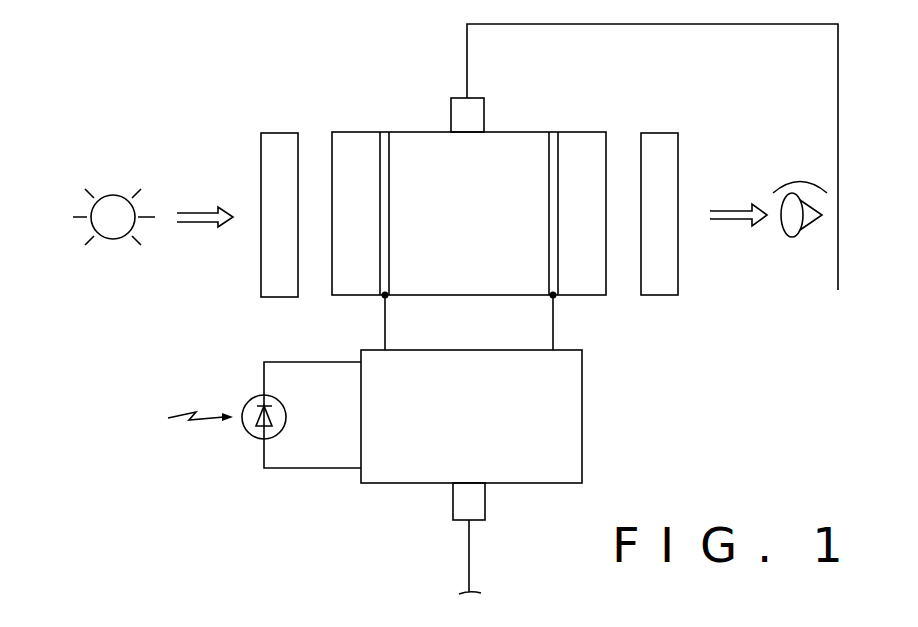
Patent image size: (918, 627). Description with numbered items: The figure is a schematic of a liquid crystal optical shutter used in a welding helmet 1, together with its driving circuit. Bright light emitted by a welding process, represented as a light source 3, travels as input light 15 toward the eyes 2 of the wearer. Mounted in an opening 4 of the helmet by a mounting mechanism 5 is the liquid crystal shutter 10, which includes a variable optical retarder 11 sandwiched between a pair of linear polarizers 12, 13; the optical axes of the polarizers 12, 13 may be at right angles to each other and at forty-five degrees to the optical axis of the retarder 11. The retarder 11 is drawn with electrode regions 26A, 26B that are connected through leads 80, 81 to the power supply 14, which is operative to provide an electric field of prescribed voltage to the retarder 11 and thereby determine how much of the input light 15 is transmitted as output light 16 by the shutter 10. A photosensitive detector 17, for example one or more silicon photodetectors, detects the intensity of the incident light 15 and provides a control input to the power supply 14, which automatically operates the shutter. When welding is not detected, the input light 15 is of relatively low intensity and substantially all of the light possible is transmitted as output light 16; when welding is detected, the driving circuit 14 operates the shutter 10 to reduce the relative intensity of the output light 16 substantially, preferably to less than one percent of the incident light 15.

The welding helmet 1 is at (366, 556).
The eyes 2 is at (808, 231).
The light source 3 is at (120, 243).
The opening 4 is at (386, 491).
The mounting mechanism 5 is at (452, 522).
The liquid crystal shutter 10 is at (638, 312).
The variable optical retarder 11 is at (485, 152).
The linear polarizer 12 is at (282, 133).
The linear polarizer 13 is at (660, 133).
The power supply 14 is at (583, 422).
The input light 15 is at (203, 207).
The output light 16 is at (733, 210).
The photosensitive detector 17 is at (248, 397).
The first electrode 26A is at (382, 132).
The second electrode 26B is at (558, 132).
The oscillator 80 is at (385, 325).
The line 81 is at (553, 325).